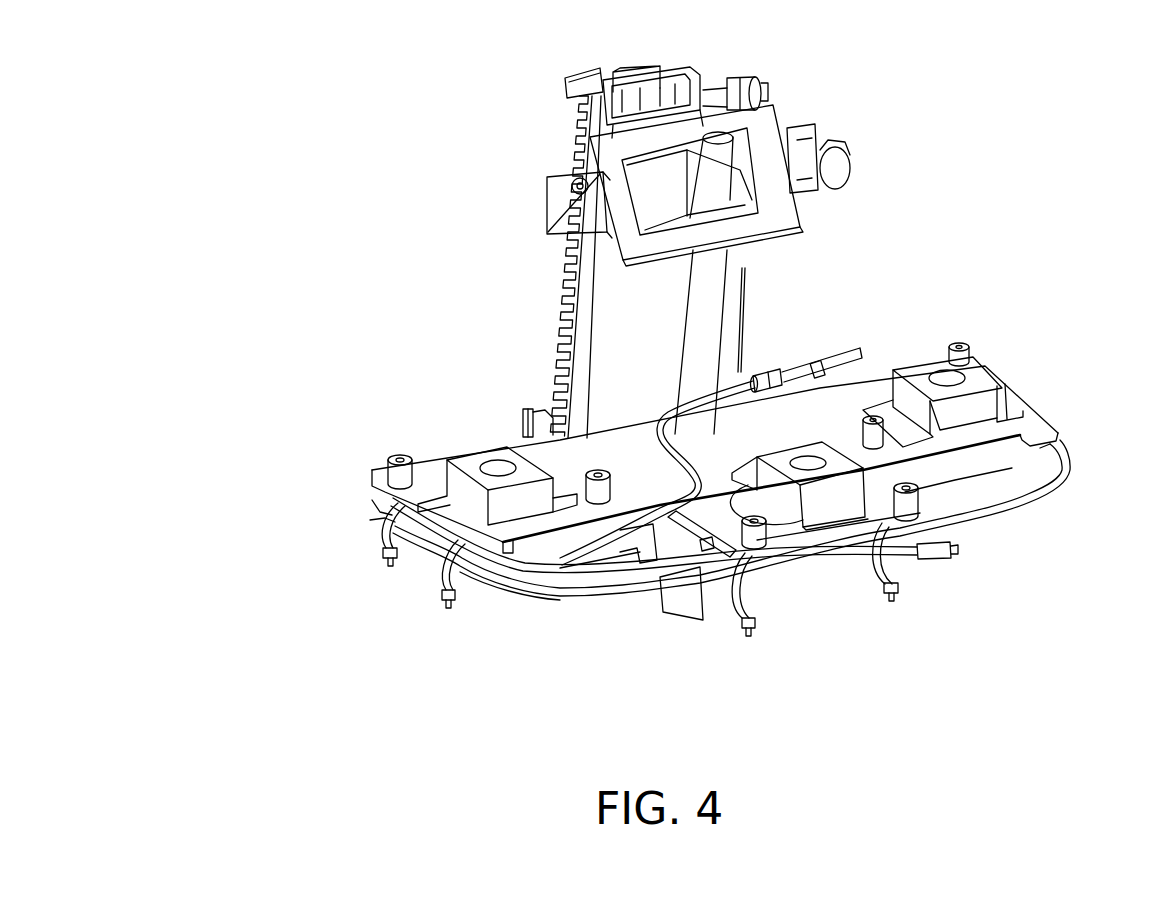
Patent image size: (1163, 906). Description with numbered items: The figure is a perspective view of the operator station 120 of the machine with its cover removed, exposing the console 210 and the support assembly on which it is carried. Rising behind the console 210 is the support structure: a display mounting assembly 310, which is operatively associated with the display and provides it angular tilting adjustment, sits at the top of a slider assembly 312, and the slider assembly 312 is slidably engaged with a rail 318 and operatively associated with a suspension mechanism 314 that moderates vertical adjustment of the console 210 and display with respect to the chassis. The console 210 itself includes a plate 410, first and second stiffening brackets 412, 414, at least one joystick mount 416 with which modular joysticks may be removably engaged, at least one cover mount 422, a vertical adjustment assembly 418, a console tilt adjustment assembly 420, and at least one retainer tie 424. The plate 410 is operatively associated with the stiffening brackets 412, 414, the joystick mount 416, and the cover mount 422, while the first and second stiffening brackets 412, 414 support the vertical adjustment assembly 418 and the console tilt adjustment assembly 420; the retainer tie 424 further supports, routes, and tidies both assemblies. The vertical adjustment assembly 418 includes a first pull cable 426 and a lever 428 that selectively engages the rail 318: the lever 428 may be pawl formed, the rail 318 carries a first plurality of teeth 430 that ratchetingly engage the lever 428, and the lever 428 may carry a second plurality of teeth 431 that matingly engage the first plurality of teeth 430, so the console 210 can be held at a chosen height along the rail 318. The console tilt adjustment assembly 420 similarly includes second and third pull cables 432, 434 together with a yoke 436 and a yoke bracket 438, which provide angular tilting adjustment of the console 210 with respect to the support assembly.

The door drive assembly 120 is at (298, 86).
The console 210 is at (936, 270).
The display mounting assembly 310 is at (548, 205).
The slider assembly 312 is at (632, 316).
The suspension mechanism 314 is at (748, 268).
The rail 318 is at (678, 70).
The plate 410 is at (872, 360).
The first stiffening bracket 412 is at (660, 594).
The second stiffening bracket 414 is at (950, 473).
The joystick mount 416 is at (972, 370).
The vertical adjustment assembly 418 is at (500, 610).
The console tilt adjustment assembly 420 is at (1058, 508).
The cover mount 422 is at (962, 344).
The retainer tie 424 is at (383, 546).
The first pull cable 426 is at (533, 598).
The lever 428 is at (528, 412).
The first plurality of teeth 430 is at (538, 323).
The second plurality of teeth 431 is at (540, 418).
The second pull cable 432 is at (958, 526).
The third pull cable 434 is at (760, 313).
The yoke 436 is at (813, 374).
The yoke bracket 438 is at (779, 370).